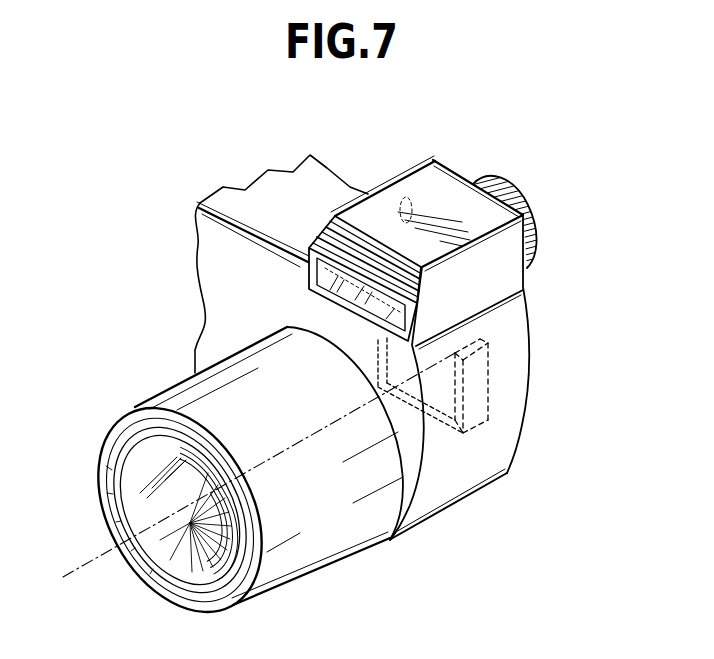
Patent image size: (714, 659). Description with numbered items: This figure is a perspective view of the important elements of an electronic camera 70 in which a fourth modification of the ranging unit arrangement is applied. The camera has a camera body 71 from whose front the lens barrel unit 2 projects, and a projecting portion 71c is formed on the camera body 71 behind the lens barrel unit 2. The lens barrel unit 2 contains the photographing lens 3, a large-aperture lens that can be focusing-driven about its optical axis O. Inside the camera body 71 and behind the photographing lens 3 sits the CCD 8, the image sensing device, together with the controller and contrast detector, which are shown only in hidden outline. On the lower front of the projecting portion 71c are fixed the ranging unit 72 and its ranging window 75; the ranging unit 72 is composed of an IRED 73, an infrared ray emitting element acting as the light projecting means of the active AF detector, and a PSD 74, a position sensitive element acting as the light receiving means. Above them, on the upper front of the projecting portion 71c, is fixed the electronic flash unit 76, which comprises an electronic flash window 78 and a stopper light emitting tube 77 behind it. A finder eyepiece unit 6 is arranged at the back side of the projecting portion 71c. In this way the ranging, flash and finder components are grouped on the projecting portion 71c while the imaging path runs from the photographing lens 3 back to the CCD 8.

The lens barrel unit 2 is at (322, 517).
The photographing lens 3 is at (143, 466).
The finder eyepiece unit 6 is at (527, 200).
The CCD 8 is at (488, 395).
The electronic camera 70 is at (178, 233).
The camera body 71 is at (463, 470).
The projecting portion 71c is at (500, 282).
The ranging unit 72 is at (263, 345).
The IRED 73 is at (370, 320).
The PSD 74 is at (316, 298).
The ranging window 75 is at (323, 277).
The electronic flash unit 76 is at (369, 210).
The stopper light emitting tube 77 is at (413, 264).
The electronic flash window 78 is at (314, 240).
The optical axis O is at (82, 566).